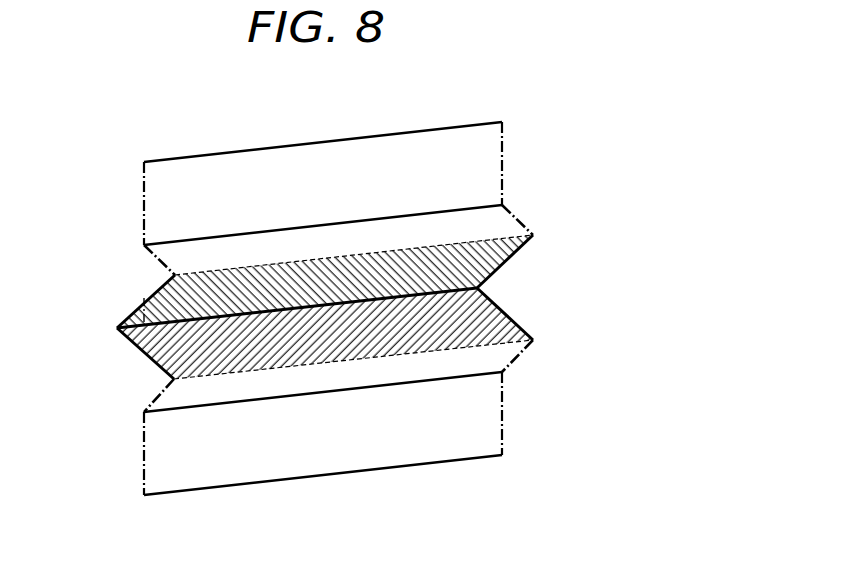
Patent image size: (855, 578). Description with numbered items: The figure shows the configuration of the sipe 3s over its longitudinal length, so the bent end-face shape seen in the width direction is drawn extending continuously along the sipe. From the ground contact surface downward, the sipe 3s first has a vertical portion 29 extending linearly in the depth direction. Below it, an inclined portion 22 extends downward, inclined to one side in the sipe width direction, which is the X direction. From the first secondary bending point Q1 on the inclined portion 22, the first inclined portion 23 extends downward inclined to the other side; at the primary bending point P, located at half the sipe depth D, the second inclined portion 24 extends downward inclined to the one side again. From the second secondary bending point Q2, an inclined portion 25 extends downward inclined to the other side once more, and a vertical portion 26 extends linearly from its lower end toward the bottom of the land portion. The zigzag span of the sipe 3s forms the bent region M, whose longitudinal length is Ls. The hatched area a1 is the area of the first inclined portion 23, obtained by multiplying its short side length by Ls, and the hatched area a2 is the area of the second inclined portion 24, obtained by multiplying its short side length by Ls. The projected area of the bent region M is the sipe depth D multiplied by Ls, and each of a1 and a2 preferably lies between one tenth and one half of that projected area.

The sipe 3s is at (522, 106).
The vertical portion 29 is at (143, 212).
The inclined portion 22 is at (157, 259).
The first inclined portion 23 is at (152, 297).
The second inclined portion 24 is at (147, 354).
The inclined portion 25 is at (155, 401).
The vertical portion 26 is at (143, 441).
The area of the first inclined portion a1 is at (350, 293).
The area of the second inclined portion a2 is at (357, 343).
The primary bending point P is at (480, 289).
The first secondary bending point Q1 is at (536, 237).
The second secondary bending point Q2 is at (536, 341).
The sipe depth D is at (144, 164).
The length in the longitudinal direction of the bent region Ls is at (502, 122).
The bent region M is at (501, 114).
The X direction X is at (385, 483).